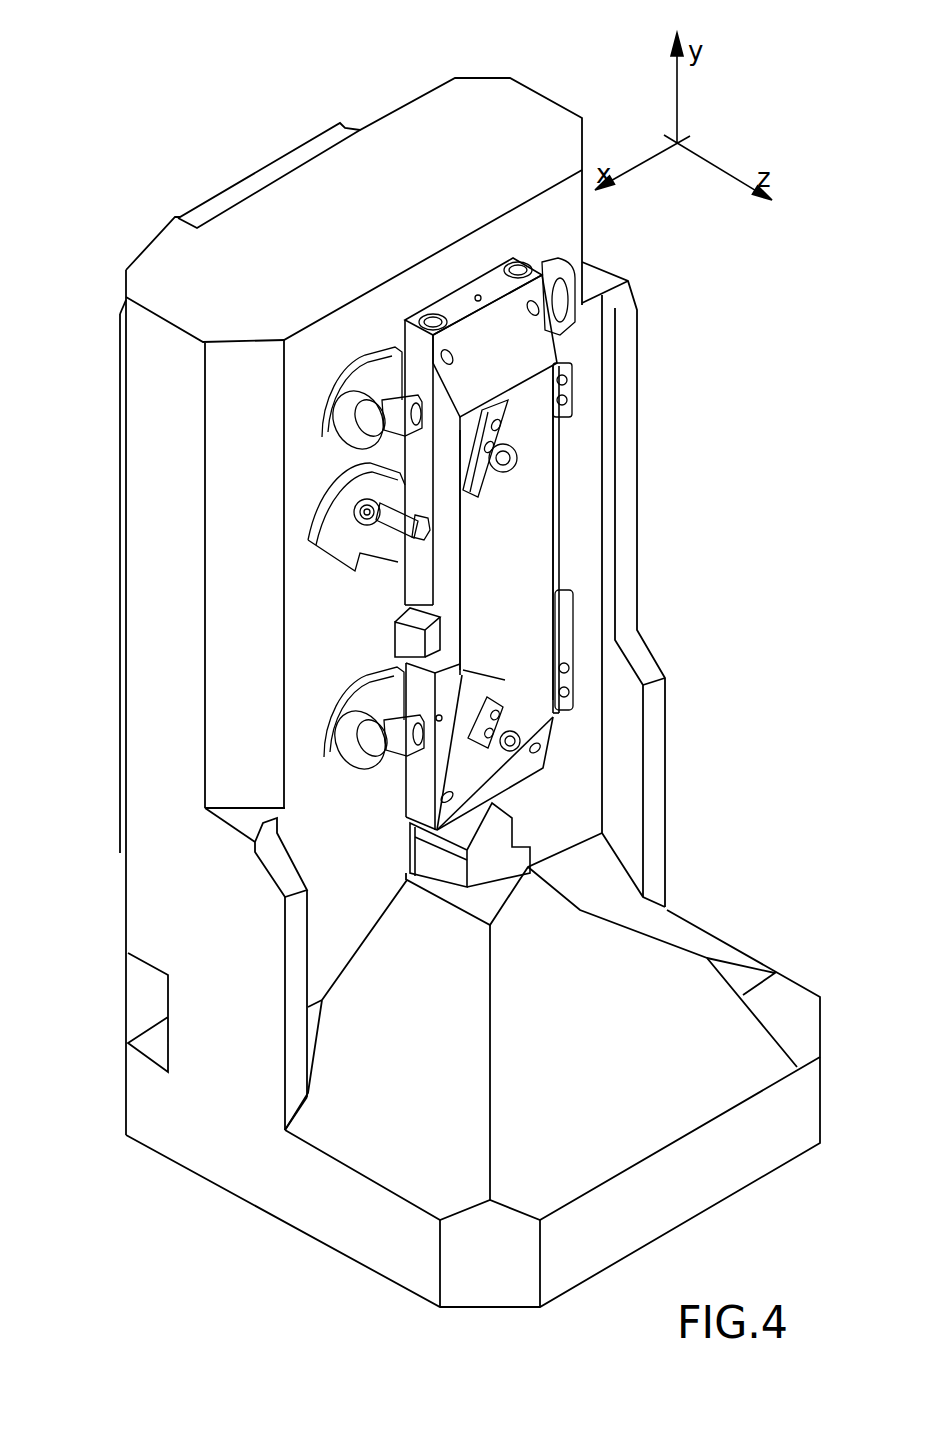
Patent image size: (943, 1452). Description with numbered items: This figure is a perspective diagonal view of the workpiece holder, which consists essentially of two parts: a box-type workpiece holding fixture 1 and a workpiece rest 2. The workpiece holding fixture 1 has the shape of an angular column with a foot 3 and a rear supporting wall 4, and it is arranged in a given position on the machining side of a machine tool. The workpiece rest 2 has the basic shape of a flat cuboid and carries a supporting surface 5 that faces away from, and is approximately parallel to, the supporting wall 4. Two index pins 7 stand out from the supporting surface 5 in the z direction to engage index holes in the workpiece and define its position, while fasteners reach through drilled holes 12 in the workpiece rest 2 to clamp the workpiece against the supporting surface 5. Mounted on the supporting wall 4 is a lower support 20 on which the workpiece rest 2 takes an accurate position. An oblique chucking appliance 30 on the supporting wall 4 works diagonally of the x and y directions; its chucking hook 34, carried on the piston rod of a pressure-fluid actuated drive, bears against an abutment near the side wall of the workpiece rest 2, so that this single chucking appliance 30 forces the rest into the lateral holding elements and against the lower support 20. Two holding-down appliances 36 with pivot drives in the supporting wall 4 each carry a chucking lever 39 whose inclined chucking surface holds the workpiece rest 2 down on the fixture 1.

The workpiece holding fixture 1 is at (540, 86).
The workpiece rest 2 is at (575, 520).
The foot 3 is at (408, 1132).
The rear supporting wall 4 is at (250, 633).
The supporting surface 5 is at (525, 595).
The index pins 7 is at (514, 466).
The drilled holes 12 is at (533, 412).
The lower support 20 is at (498, 828).
The oblique chucking appliance 30 is at (384, 592).
The chucking hook 34 is at (392, 562).
The holding-down appliances 36 is at (340, 459).
The chucking lever 39 is at (390, 432).